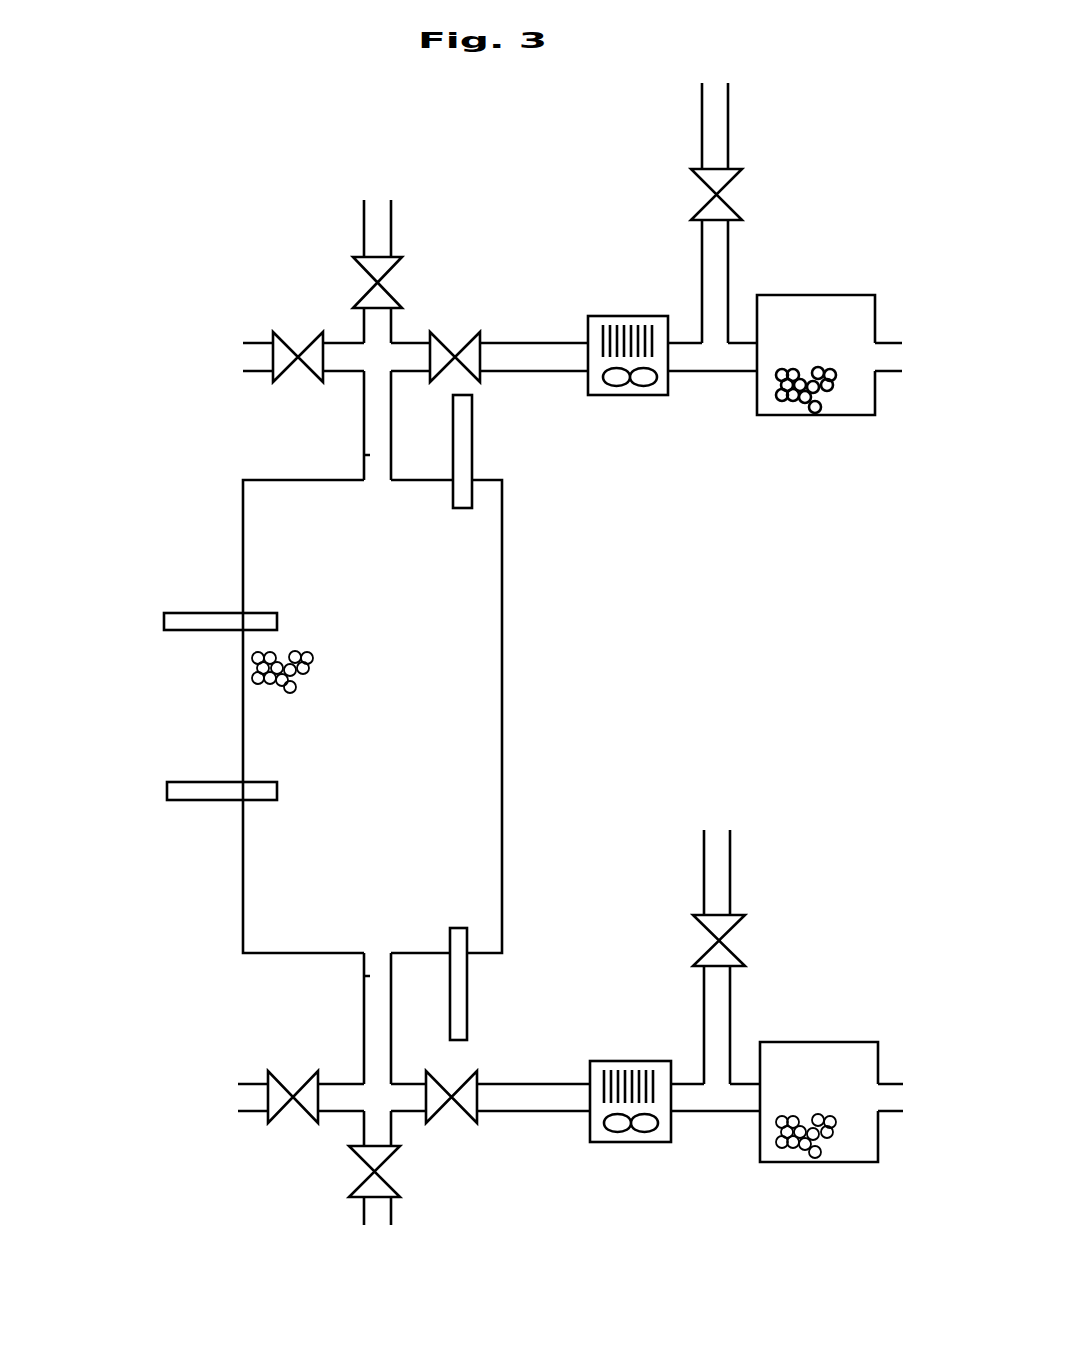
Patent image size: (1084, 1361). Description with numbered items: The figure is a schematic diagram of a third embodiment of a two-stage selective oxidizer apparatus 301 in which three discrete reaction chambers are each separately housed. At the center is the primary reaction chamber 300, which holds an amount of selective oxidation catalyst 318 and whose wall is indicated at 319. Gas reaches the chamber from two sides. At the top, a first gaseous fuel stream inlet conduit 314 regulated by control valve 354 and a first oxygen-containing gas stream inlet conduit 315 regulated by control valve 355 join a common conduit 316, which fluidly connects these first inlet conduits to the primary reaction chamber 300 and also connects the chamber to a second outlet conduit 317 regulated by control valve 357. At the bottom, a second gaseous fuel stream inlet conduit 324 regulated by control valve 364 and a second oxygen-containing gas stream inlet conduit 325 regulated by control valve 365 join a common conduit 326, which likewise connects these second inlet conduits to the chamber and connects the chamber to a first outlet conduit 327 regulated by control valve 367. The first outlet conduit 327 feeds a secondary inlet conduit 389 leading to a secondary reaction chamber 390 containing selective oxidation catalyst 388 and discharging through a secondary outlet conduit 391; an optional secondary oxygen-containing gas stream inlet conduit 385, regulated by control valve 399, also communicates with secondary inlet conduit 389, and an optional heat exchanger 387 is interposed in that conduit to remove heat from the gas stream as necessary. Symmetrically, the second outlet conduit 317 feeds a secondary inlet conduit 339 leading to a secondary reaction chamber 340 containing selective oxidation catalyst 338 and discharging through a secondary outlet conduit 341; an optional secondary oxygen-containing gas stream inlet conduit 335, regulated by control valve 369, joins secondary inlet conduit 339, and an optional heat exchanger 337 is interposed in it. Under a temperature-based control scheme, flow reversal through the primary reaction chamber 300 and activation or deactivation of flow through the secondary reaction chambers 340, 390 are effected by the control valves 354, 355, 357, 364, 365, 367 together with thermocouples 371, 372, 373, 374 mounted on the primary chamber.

The primary reaction chamber 300 is at (468, 790).
The two-stage selective oxidizer apparatus 301 is at (205, 470).
The first gaseous fuel stream inlet conduit 314 is at (391, 213).
The first oxygen-containing gas stream inlet conduit 315 is at (257, 365).
The common conduit 316 is at (364, 455).
The second outlet conduit 317 is at (517, 348).
The selective oxidation catalyst 318 is at (268, 680).
The chamber wall 319 is at (283, 480).
The second gaseous fuel stream inlet conduit 324 is at (380, 1218).
The second oxygen-containing gas stream inlet conduit 325 is at (250, 1083).
The common conduit 326 is at (364, 976).
The first outlet conduit 327 is at (502, 1122).
The secondary oxygen-containing gas stream inlet conduit 335 is at (722, 122).
The heat exchanger 337 is at (640, 320).
The selective oxidation catalyst 338 is at (815, 408).
The secondary inlet conduit 339 is at (722, 363).
The secondary reaction chamber 340 is at (773, 305).
The secondary outlet conduit 341 is at (892, 343).
The control valve 354 is at (365, 268).
The control valve 355 is at (270, 335).
The control valve 357 is at (447, 338).
The control valve 364 is at (358, 1186).
The control valve 365 is at (305, 1110).
The control valve 367 is at (445, 1112).
The control valve 369 is at (735, 204).
The thermocouple 371 is at (192, 782).
The thermocouple 372 is at (470, 1000).
The thermocouple 373 is at (190, 630).
The thermocouple 374 is at (478, 408).
The secondary oxygen-containing gas stream inlet conduit 385 is at (726, 870).
The heat exchanger 387 is at (640, 1065).
The selective oxidation catalyst 388 is at (818, 1155).
The secondary inlet conduit 389 is at (724, 1108).
The secondary reaction chamber 390 is at (775, 1050).
The secondary outlet conduit 391 is at (895, 1088).
The control valve 399 is at (738, 955).